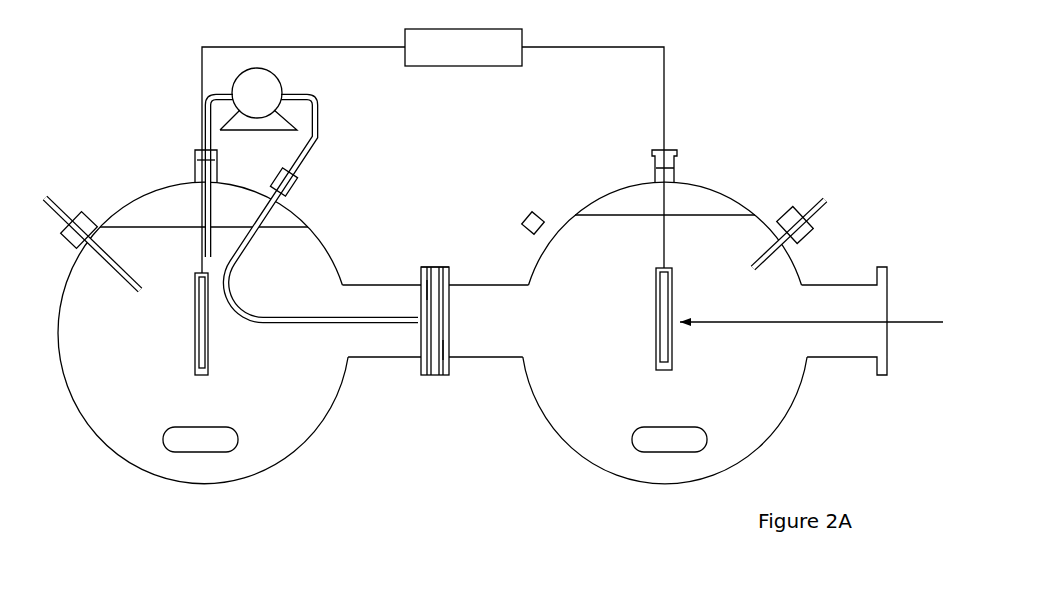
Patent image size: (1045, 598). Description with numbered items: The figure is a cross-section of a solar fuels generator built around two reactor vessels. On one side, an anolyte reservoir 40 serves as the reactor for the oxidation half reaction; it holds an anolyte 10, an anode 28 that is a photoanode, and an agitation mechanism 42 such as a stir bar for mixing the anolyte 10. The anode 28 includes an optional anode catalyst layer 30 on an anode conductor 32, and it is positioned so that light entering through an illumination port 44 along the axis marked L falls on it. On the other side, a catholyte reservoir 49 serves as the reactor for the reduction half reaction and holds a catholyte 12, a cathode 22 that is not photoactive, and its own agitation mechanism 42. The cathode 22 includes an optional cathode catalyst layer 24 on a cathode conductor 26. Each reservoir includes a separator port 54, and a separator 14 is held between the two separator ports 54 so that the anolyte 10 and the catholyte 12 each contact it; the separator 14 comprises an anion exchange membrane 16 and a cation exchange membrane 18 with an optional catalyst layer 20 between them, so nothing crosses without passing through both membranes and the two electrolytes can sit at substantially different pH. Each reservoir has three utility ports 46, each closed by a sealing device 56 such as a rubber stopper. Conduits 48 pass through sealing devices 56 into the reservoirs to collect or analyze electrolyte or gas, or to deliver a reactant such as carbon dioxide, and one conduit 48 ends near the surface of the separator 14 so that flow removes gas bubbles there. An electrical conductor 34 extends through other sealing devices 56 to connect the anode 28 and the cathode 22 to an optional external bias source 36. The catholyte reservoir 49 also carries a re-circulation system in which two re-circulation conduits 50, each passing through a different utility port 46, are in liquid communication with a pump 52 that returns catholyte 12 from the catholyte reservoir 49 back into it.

The anolyte 10 is at (538, 400).
The catholyte 12 is at (128, 435).
The separator 14 is at (435, 255).
The anion exchange membrane 16 is at (443, 356).
The cation exchange membrane 18 is at (425, 268).
The catalyst layer 20 is at (430, 290).
The cathode 22 is at (186, 328).
The cathode catalyst layer 24 is at (195, 300).
The cathode conductor 26 is at (207, 340).
The anode 28 is at (654, 319).
The anode catalyst layer 30 is at (673, 290).
The anode conductor 32 is at (656, 292).
The electrical conductor 34 is at (332, 45).
The external bias source 36 is at (463, 29).
The anolyte reservoir 40 is at (595, 465).
The agitation mechanism 42 is at (185, 427).
The illumination port 44 is at (883, 265).
The utility port 46 is at (224, 168).
The conduit 48 is at (48, 205).
The catholyte reservoir 49 is at (293, 453).
The re-circulation conduit 50 is at (213, 94).
The pump 52 is at (292, 70).
The separator port 54 is at (450, 267).
The sealing device 56 is at (197, 150).
The axis L is at (897, 320).